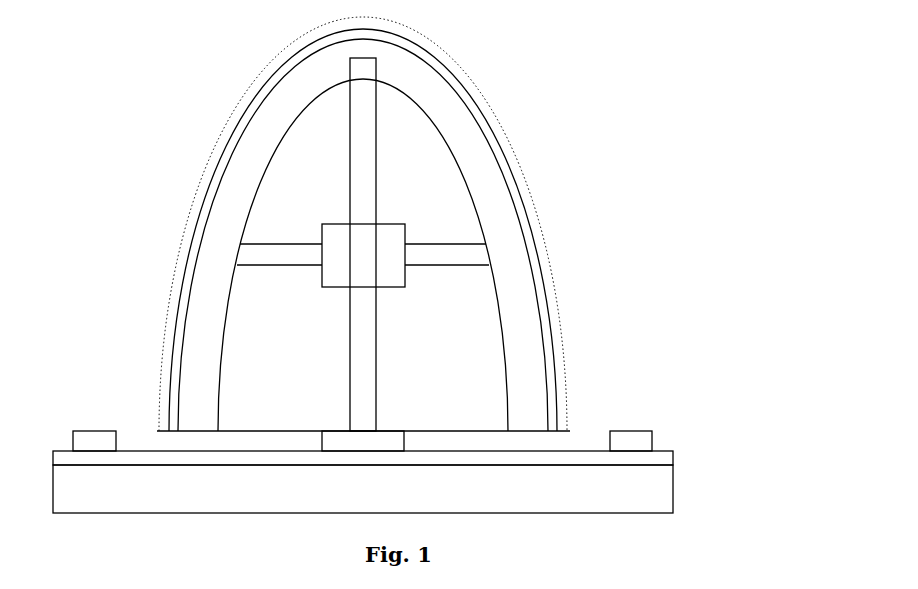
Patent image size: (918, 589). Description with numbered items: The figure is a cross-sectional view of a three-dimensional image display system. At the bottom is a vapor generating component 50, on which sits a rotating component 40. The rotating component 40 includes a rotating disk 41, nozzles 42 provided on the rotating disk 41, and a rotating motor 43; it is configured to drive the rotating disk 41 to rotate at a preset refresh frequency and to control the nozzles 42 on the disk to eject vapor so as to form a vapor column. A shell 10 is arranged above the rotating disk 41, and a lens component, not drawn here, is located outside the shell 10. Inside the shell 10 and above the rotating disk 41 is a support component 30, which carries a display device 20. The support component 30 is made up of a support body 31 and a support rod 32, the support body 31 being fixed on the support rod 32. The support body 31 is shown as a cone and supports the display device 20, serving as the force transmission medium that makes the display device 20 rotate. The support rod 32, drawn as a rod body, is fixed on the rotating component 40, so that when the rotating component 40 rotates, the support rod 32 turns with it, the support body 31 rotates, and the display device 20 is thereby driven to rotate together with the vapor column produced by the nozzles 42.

The shell 10 is at (450, 57).
The display device 20 is at (485, 120).
The support component 30 is at (435, 235).
The support body 31 is at (508, 183).
The support rod 32 is at (437, 253).
The rotating component 40 is at (400, 261).
The rotating disk 41 is at (633, 459).
The nozzle 42 is at (632, 436).
The rotating motor 43 is at (362, 439).
The vapor generating component 50 is at (363, 485).